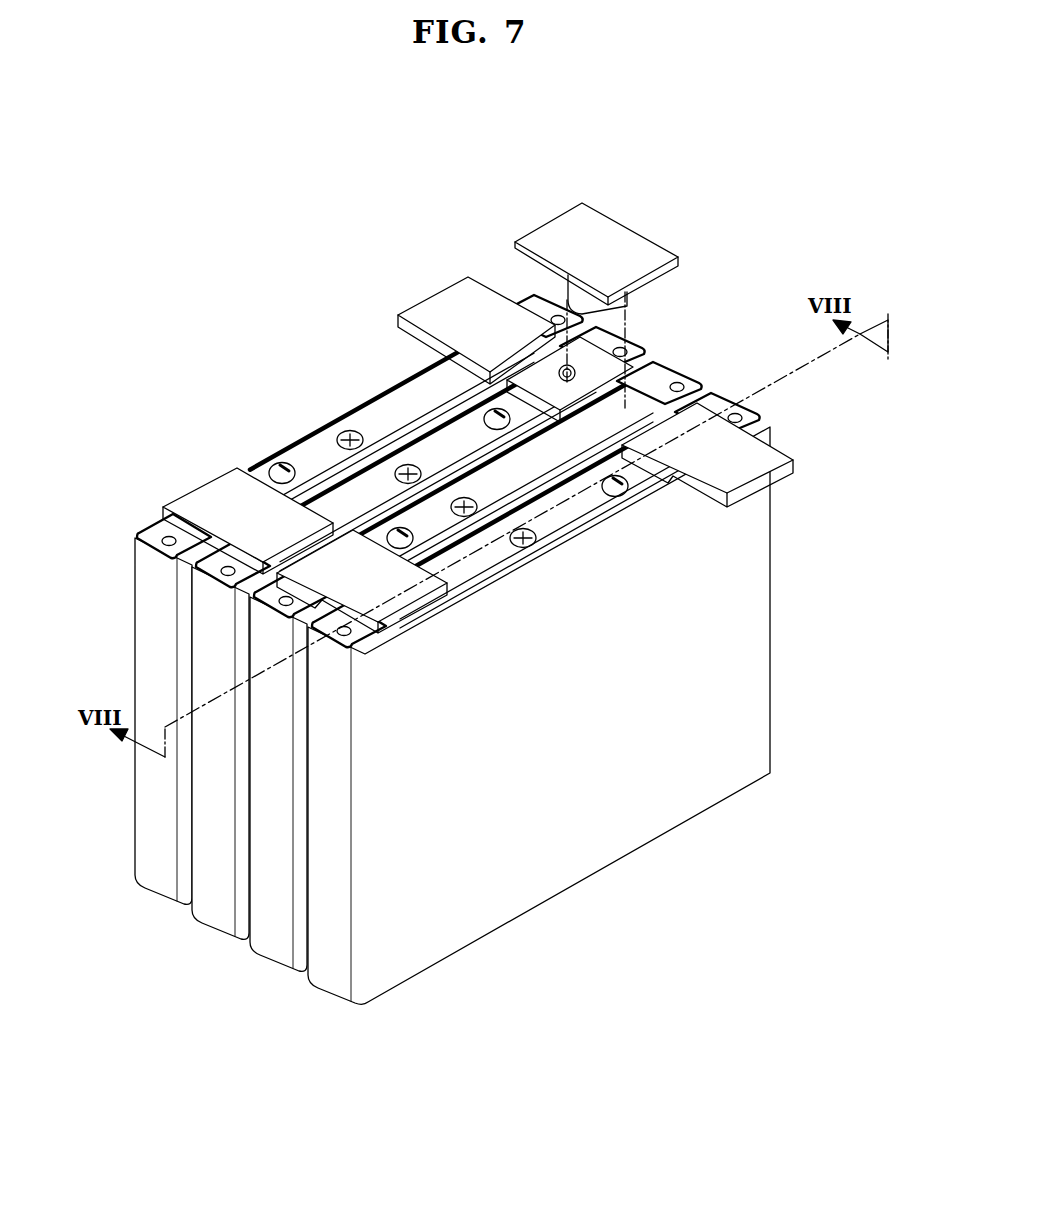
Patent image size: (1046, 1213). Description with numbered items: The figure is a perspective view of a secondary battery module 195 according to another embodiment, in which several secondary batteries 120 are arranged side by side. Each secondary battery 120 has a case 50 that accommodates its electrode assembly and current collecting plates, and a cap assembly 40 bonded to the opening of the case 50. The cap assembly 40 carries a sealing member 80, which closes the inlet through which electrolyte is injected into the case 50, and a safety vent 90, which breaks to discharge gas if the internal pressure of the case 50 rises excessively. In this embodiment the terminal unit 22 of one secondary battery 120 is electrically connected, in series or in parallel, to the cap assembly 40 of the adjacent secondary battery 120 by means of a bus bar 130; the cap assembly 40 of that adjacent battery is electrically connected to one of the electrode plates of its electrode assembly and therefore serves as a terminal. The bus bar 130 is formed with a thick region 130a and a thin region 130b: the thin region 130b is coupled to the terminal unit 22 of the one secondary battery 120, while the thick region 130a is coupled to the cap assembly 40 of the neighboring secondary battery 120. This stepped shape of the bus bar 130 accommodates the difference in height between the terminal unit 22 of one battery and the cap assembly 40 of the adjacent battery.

The battery module 195 is at (303, 341).
The secondary battery 120 is at (151, 902).
The case 50 is at (145, 603).
The terminal unit 22 is at (163, 516).
The cap assembly 40 is at (400, 395).
The sealing member 80 is at (283, 465).
The safety vent 90 is at (352, 430).
The bus bar 130 is at (215, 497).
The thick region 130a is at (640, 292).
The thin region 130b is at (521, 252).